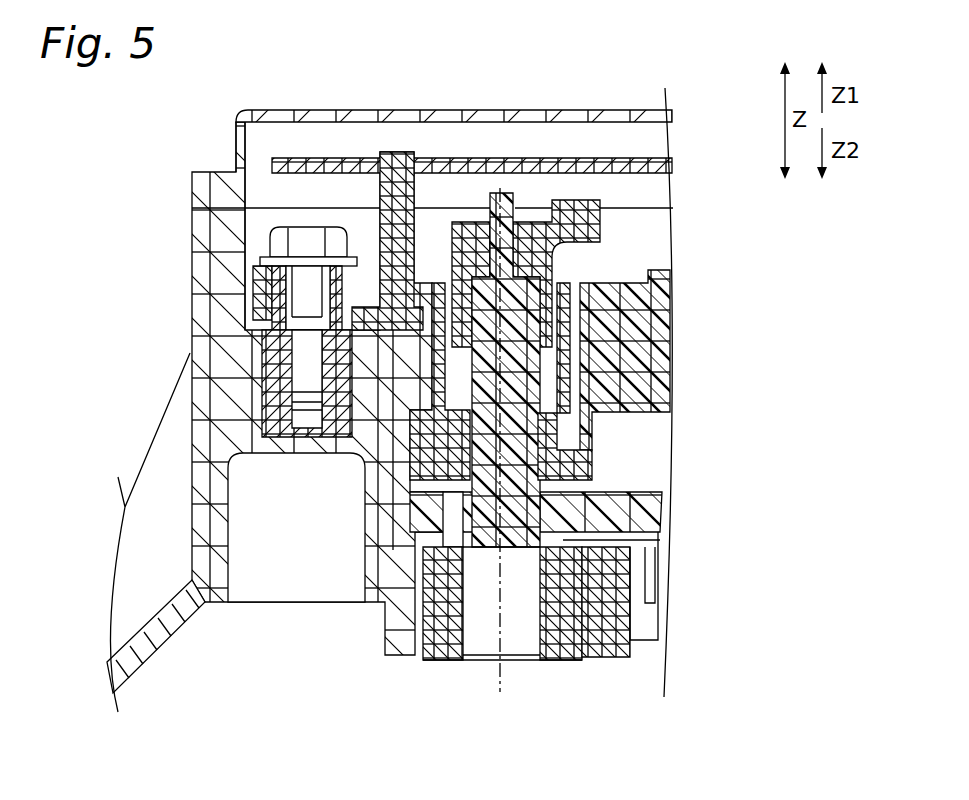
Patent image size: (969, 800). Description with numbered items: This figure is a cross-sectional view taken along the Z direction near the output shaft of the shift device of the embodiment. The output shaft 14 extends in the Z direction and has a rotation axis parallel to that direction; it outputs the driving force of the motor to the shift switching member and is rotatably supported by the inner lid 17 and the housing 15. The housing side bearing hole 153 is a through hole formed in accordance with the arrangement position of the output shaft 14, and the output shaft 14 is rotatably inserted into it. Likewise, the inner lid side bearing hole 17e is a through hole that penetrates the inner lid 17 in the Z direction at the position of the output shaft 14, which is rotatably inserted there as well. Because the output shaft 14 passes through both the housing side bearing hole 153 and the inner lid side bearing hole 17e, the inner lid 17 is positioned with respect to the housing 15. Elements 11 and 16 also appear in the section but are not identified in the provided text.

The frame plate 11 is at (567, 158).
The output shaft 14 is at (491, 196).
The housing 15 is at (384, 617).
The cover plate 16 is at (398, 118).
The inner lid 17 is at (617, 285).
The inner lid side bearing hole 17e is at (533, 450).
The housing side bearing hole 153 is at (588, 569).